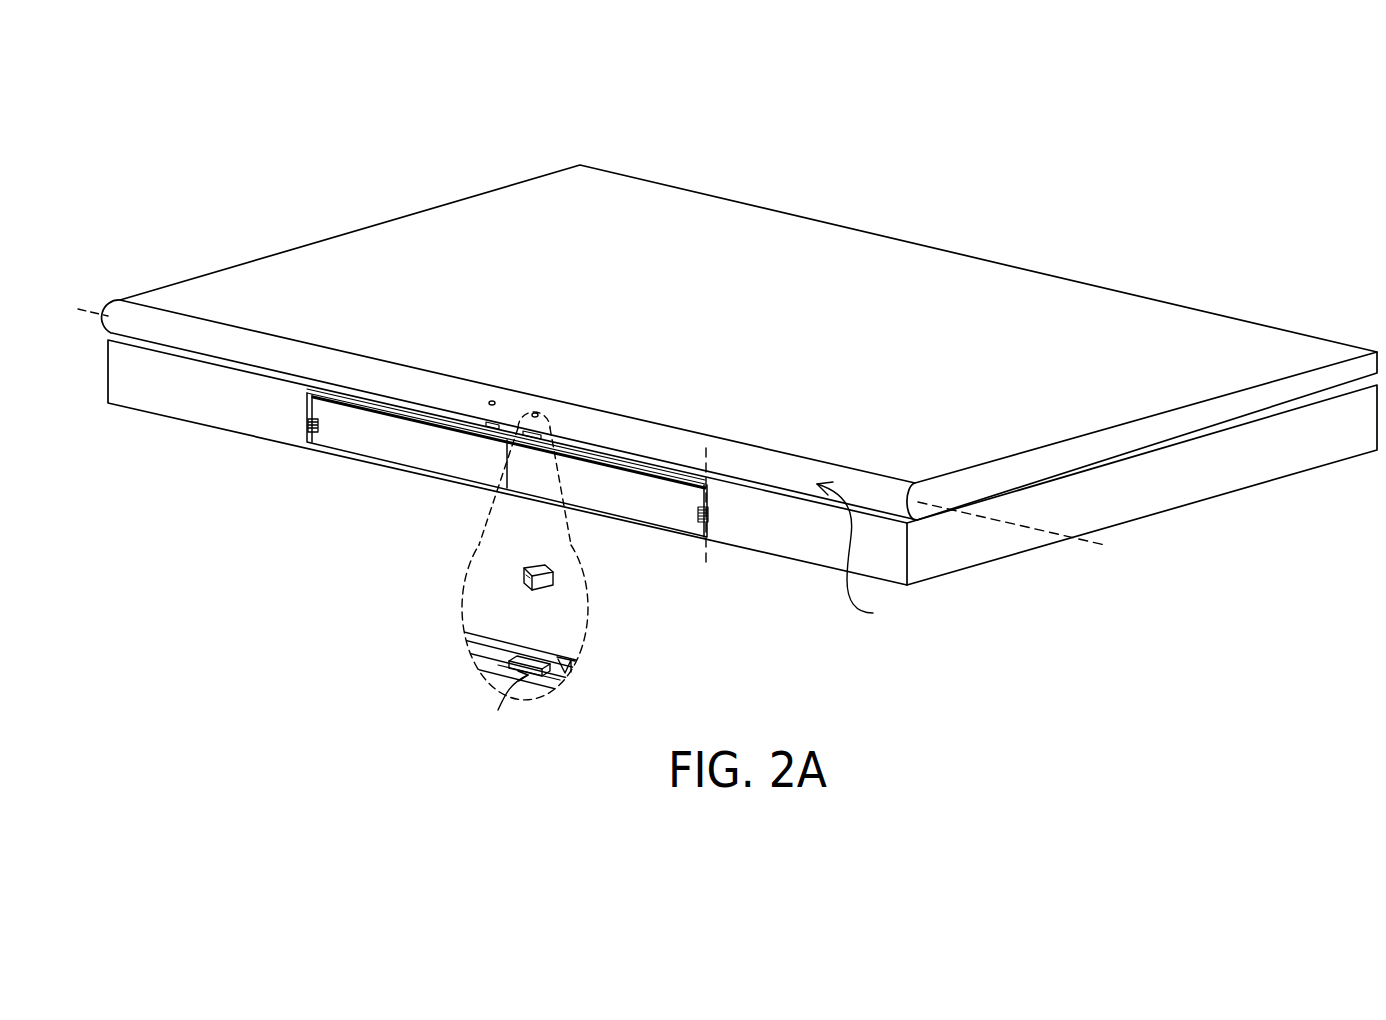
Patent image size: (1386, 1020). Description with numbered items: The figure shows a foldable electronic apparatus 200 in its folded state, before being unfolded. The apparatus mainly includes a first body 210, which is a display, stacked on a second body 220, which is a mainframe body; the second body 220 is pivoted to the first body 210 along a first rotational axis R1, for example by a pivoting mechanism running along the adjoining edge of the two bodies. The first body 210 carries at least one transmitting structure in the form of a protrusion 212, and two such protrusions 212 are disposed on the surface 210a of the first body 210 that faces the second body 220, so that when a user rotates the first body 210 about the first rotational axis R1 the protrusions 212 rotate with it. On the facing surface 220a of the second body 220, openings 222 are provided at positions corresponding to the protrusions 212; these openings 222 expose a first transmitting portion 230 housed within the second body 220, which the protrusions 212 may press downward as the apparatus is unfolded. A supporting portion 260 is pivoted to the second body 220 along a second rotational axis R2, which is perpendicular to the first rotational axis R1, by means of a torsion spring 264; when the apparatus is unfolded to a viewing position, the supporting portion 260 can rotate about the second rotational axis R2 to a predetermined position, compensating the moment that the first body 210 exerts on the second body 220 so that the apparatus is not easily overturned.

The foldable electronic apparatus 200 is at (1362, 702).
The first body 210 is at (1300, 350).
The surface of the first body 210a is at (867, 558).
The protrusion 212 is at (522, 582).
The second body 220 is at (1307, 453).
The surface of the second body 220a is at (519, 590).
The opening 222 is at (562, 673).
The first transmitting portion 230 is at (533, 662).
The supporting portion 260 is at (640, 510).
The torsion spring 264 is at (305, 430).
The first rotational axis R1 is at (607, 439).
The second rotational axis R2 is at (710, 526).